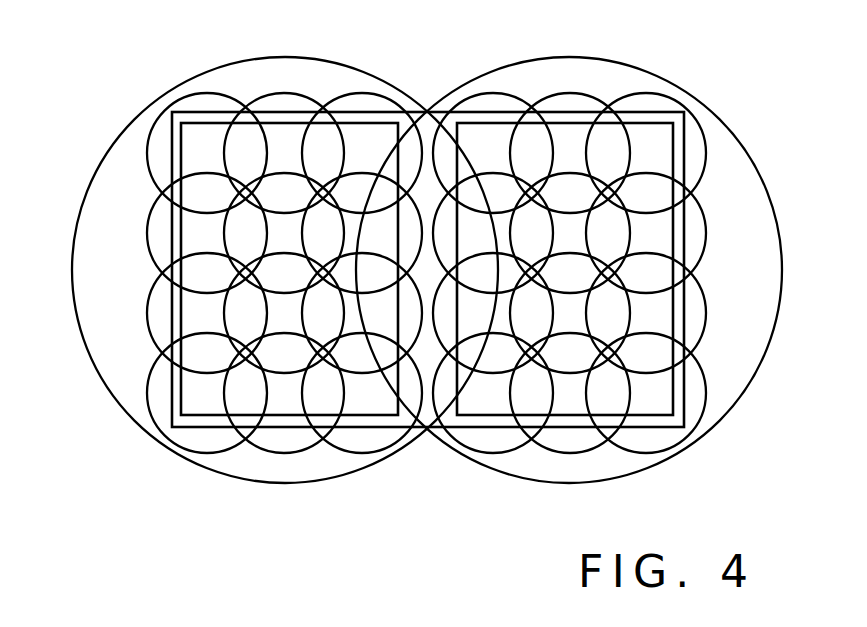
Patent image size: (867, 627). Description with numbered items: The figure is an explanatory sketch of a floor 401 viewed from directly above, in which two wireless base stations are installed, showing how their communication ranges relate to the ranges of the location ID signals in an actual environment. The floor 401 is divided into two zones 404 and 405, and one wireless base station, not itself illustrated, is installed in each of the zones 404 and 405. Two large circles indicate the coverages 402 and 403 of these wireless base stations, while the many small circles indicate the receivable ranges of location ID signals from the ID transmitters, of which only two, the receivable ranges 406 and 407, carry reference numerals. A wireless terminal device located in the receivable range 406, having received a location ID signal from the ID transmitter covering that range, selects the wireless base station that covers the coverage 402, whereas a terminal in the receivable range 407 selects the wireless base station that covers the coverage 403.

The floor 401 is at (170, 224).
The coverage of wireless base station 402 is at (210, 74).
The coverage of wireless base station 403 is at (497, 71).
The zone 404 is at (168, 371).
The zone 405 is at (697, 173).
The receivable range of location ID signal 406 is at (150, 130).
The receivable range of location ID signal 407 is at (703, 132).